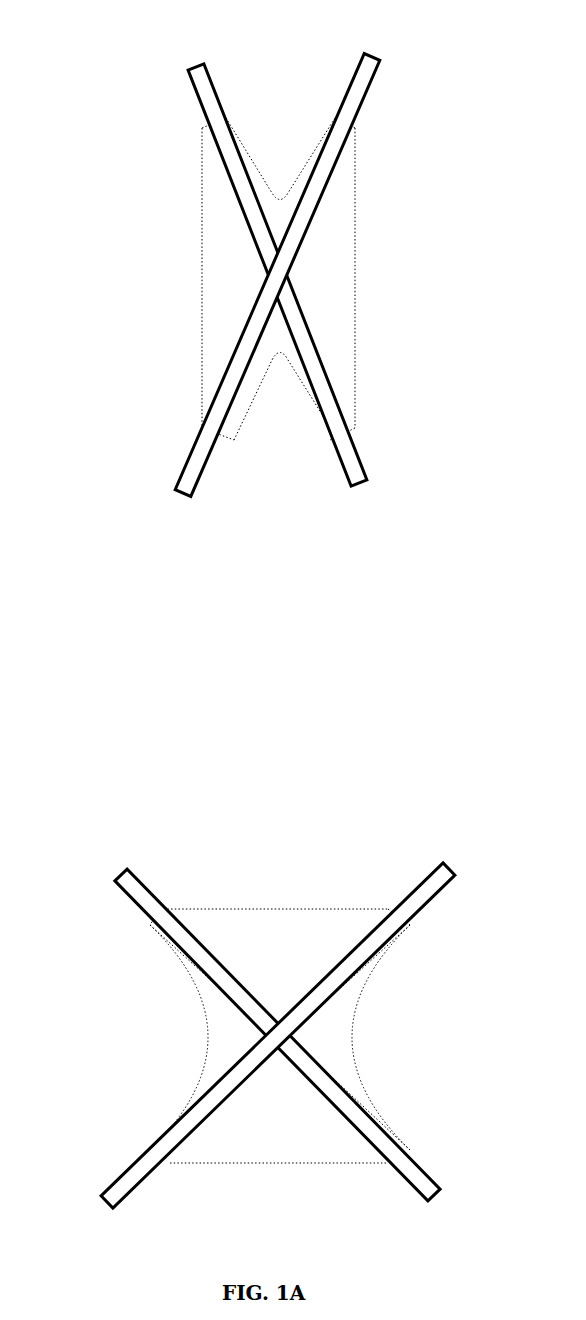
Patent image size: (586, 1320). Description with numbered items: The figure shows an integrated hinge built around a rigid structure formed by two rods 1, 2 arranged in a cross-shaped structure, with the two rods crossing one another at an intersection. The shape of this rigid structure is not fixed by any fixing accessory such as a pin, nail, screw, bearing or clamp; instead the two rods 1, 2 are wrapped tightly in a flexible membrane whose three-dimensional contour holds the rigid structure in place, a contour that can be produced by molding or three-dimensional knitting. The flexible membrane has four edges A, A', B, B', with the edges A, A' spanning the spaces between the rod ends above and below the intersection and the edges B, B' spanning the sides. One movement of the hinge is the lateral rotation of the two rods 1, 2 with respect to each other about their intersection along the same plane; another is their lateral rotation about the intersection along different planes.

The rod 1 is at (260, 605).
The rod 2 is at (291, 608).
The edge of flexible membrane A is at (280, 518).
The edge of flexible membrane A' is at (278, 782).
The edge of flexible membrane B is at (209, 639).
The edge of flexible membrane B' is at (351, 639).